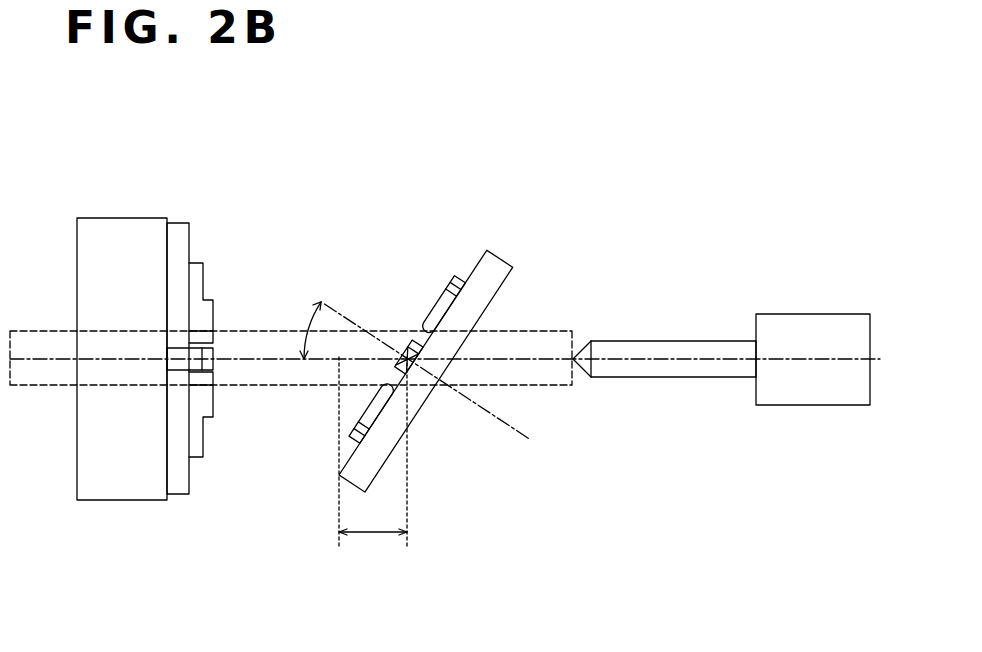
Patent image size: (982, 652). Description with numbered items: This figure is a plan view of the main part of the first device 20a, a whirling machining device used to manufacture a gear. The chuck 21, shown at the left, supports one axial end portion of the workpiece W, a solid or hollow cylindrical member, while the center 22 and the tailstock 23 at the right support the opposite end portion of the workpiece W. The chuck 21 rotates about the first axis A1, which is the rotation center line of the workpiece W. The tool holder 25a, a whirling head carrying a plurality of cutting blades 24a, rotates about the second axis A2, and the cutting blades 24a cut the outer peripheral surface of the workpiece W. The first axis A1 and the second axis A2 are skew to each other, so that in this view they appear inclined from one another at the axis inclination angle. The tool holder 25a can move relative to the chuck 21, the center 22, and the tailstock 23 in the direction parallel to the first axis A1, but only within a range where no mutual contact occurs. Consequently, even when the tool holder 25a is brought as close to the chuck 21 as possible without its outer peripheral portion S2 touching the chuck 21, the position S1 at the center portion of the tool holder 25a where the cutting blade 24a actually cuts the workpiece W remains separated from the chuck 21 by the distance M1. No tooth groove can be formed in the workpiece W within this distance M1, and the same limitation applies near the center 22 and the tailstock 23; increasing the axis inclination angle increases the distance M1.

The chuck 21 is at (177, 223).
The workpiece W is at (263, 331).
The center 22 is at (675, 341).
The tailstock 23 is at (798, 314).
The first device 20a is at (674, 172).
The cutting blade 24a is at (440, 296).
The tool holder 25a is at (513, 266).
The first axis A1 is at (700, 378).
The second axis A2 is at (529, 439).
The position where the cutting blade cuts the workpiece S1 is at (401, 353).
The outer peripheral portion of the tool holder S2 is at (339, 475).
The distance M1 is at (373, 452).